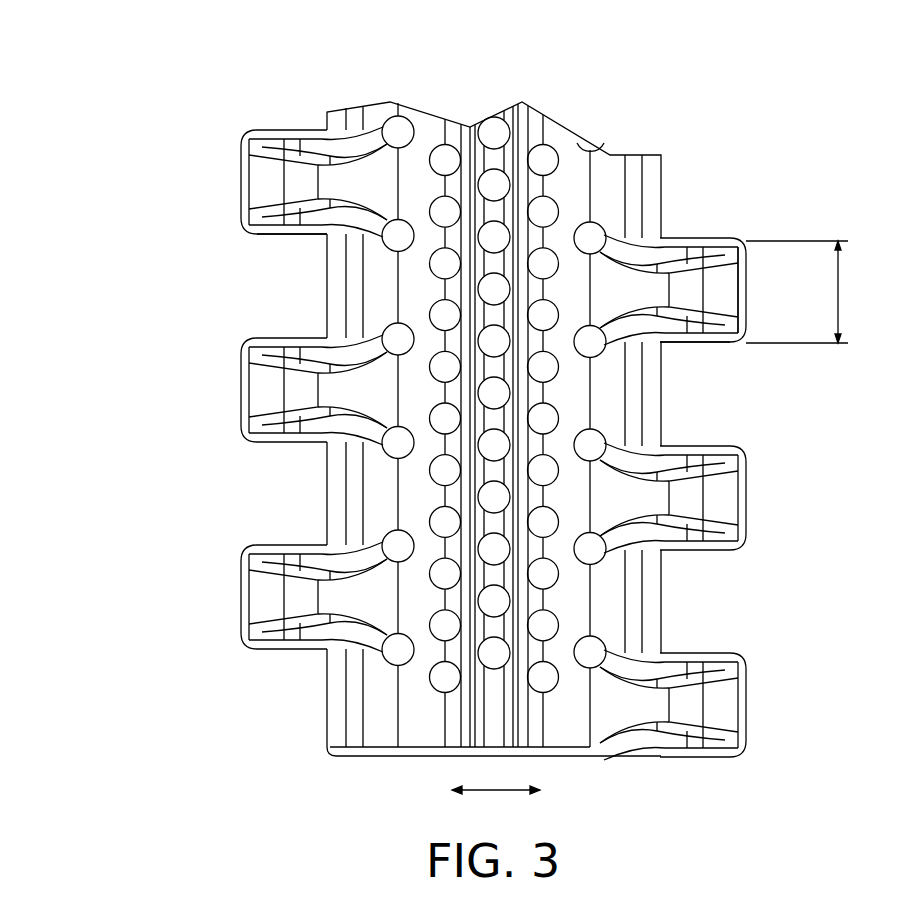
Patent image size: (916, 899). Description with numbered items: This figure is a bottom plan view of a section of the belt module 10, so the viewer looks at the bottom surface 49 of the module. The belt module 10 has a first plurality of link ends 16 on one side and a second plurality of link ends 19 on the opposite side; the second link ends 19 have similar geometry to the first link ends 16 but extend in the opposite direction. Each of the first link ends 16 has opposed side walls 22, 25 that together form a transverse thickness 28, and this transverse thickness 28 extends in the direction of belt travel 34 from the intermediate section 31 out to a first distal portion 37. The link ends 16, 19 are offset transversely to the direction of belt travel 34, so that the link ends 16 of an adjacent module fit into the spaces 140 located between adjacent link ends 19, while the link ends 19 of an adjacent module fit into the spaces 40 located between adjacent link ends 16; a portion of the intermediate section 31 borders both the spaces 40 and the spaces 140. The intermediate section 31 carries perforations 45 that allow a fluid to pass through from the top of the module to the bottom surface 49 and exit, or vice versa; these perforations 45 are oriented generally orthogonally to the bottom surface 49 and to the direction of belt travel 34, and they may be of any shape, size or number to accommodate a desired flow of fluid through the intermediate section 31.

The belt module 10 is at (120, 138).
The side wall 22 is at (296, 130).
The side wall 25 is at (296, 233).
The second plurality of link ends 19 is at (262, 389).
The spaces 140 is at (258, 508).
The first distal portion 37 is at (749, 291).
The transverse thickness 28 is at (839, 291).
The first plurality of link ends 16 is at (733, 500).
The spaces 40 is at (707, 612).
The intermediate section 31 is at (438, 734).
The perforations 45 is at (447, 680).
The direction of belt travel 34 is at (498, 790).
The bottom surface 49 is at (557, 728).